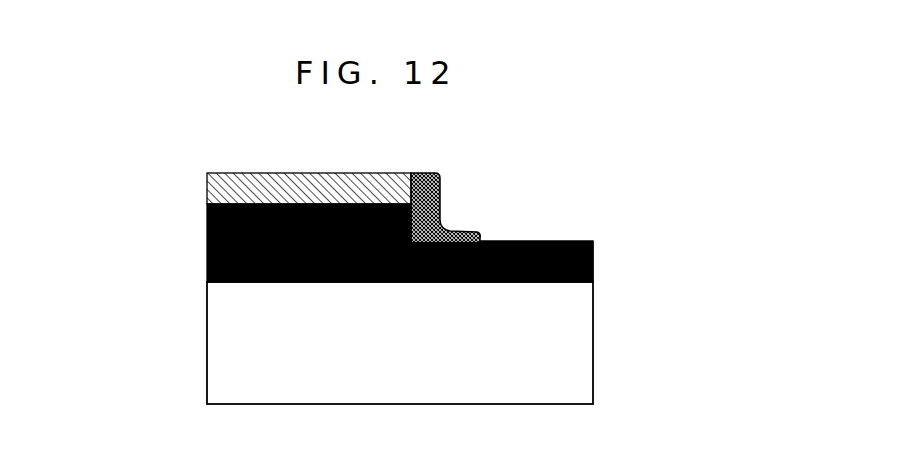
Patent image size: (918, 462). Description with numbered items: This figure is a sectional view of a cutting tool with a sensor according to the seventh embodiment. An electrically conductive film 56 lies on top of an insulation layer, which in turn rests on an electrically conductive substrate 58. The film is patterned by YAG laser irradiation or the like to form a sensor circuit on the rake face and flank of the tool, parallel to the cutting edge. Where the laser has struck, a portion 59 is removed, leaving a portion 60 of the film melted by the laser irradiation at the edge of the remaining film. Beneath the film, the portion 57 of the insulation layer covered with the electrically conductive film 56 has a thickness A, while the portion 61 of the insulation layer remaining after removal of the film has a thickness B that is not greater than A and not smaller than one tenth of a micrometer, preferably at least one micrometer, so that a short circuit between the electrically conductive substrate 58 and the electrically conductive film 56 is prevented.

The electrically conductive film 56 is at (206, 197).
The portion of insulation layer covered with the electrically conductive film 57 is at (206, 247).
The electrically conductive substrate 58 is at (206, 350).
The portion removed by laser irradiation 59 is at (479, 218).
The portion melted by the laser irradiation 60 is at (443, 190).
The portion of the insulation layer remaining after removal of the electrically cond 61 is at (602, 269).